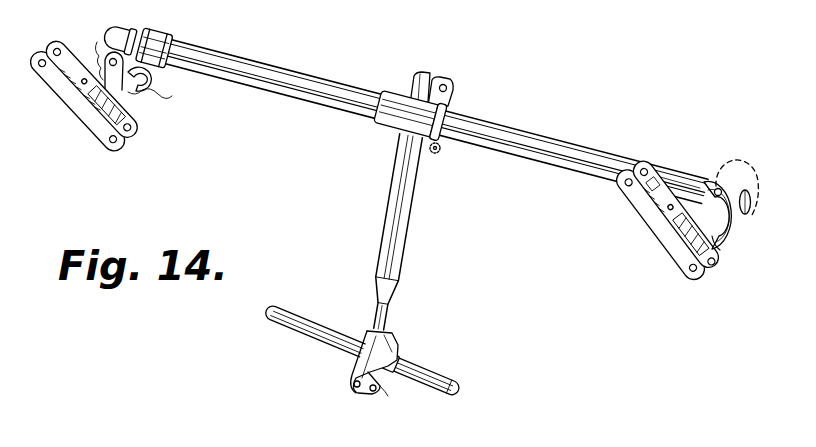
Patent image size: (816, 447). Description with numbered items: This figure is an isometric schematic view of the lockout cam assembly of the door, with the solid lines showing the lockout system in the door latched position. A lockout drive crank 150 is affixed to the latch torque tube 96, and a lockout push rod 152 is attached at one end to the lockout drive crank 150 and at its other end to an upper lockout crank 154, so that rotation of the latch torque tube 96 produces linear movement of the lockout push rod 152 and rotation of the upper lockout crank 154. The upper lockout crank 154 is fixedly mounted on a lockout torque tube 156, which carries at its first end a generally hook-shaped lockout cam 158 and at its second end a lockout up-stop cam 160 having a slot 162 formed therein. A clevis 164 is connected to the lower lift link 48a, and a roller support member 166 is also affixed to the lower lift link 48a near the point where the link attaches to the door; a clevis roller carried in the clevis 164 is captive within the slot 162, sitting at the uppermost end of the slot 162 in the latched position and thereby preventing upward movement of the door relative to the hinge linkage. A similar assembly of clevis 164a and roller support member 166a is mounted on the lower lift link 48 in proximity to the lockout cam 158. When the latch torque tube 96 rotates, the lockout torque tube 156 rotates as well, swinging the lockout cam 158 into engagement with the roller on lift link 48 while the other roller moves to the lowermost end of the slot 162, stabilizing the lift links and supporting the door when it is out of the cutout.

The lower lift link 48 is at (664, 228).
The lower lift link 48a is at (88, 132).
The latch torque tube 96 is at (433, 388).
The lockout drive crank 150 is at (383, 383).
The lockout push rod 152 is at (400, 253).
The upper lockout crank 154 is at (445, 101).
The lockout torque tube 156 is at (540, 153).
The lockout cam 158 is at (152, 82).
The lockout up-stop cam 160 is at (750, 230).
The slot 162 is at (718, 186).
The clevis 164 is at (690, 202).
The clevis 164a is at (104, 58).
The roller support member 166 is at (719, 246).
The roller support member 166a is at (122, 100).